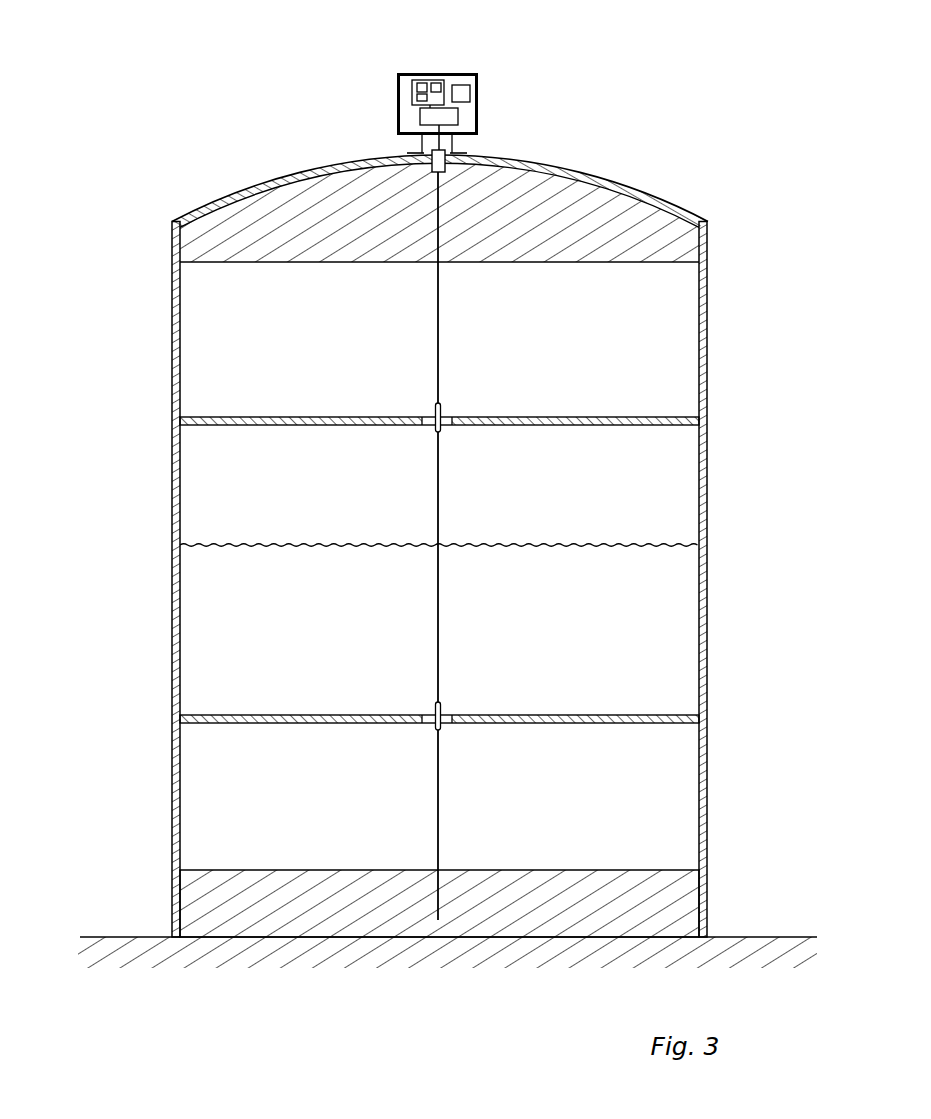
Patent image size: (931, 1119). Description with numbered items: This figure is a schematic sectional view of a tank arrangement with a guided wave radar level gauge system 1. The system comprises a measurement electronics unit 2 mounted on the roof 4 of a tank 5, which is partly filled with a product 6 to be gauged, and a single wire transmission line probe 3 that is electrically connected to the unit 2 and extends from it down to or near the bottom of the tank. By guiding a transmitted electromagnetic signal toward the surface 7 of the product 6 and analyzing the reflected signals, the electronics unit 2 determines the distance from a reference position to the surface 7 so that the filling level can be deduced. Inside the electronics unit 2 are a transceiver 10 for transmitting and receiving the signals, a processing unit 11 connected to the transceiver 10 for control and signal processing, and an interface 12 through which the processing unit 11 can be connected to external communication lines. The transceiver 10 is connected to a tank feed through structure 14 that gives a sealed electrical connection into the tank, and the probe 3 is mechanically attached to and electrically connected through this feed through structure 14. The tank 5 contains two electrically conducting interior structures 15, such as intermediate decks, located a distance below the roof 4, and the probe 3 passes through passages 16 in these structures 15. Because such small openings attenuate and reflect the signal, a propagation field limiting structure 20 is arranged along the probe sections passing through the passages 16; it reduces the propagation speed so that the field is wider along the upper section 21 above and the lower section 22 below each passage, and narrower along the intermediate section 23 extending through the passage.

The radar level gauge system 1 is at (377, 146).
The measurement electronics unit 2 is at (383, 67).
The single wire transmission line probe 3 is at (438, 313).
The roof 4 is at (632, 182).
The tank 5 is at (710, 360).
The product 6 is at (593, 643).
The surface 7 is at (532, 544).
The transceiver 10 is at (447, 116).
The processing unit 11 is at (418, 80).
The interface 12 is at (458, 87).
The tank feed through structure 14 is at (445, 157).
The interior structures 15 is at (439, 581).
The passages 16 is at (447, 416).
The propagation field limiting structure 20 is at (442, 713).
The first, upper section 21 is at (425, 342).
The second, lower section 22 is at (424, 489).
The third, intermediate section 23 is at (424, 408).